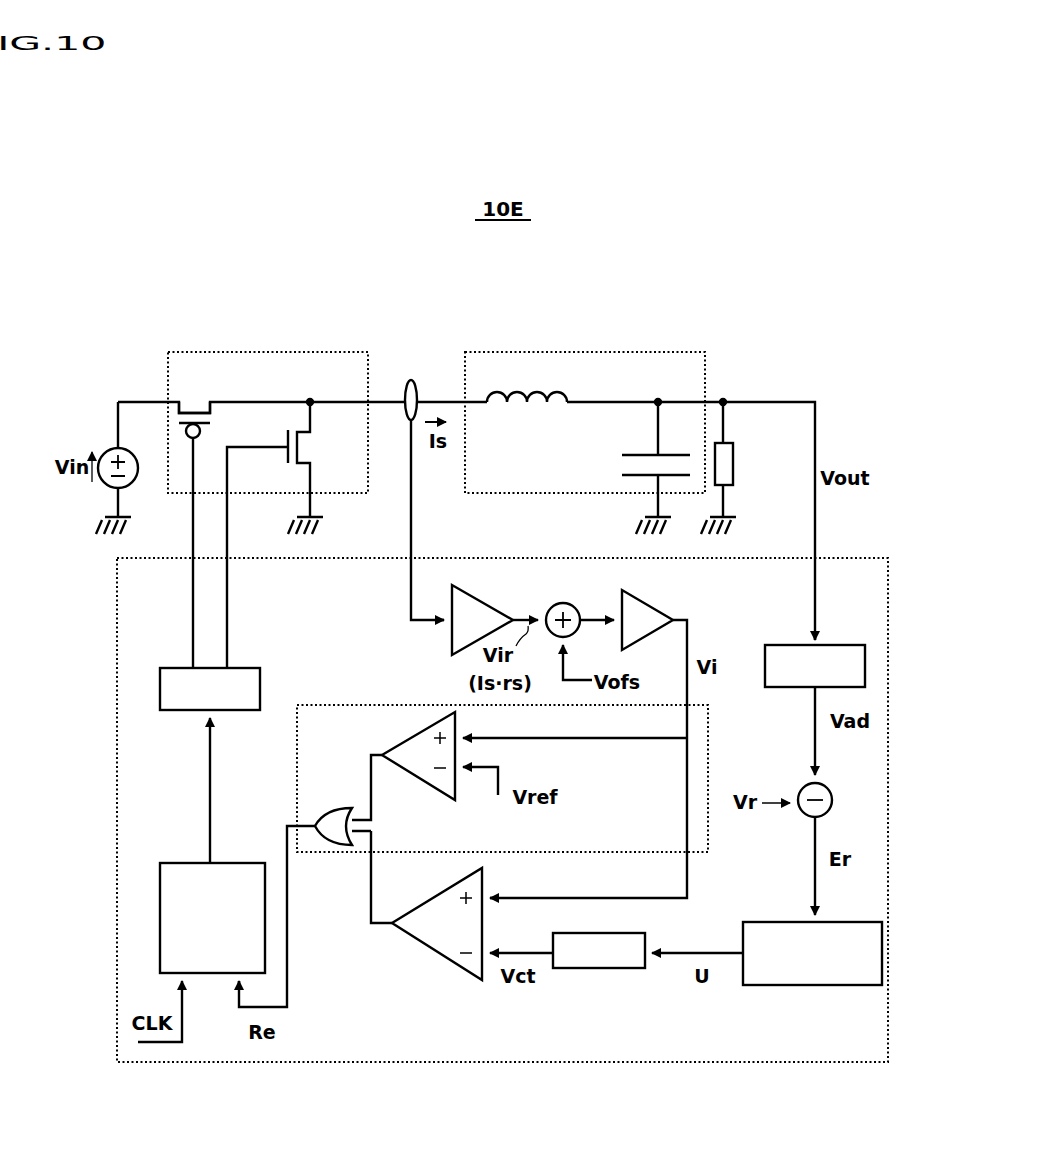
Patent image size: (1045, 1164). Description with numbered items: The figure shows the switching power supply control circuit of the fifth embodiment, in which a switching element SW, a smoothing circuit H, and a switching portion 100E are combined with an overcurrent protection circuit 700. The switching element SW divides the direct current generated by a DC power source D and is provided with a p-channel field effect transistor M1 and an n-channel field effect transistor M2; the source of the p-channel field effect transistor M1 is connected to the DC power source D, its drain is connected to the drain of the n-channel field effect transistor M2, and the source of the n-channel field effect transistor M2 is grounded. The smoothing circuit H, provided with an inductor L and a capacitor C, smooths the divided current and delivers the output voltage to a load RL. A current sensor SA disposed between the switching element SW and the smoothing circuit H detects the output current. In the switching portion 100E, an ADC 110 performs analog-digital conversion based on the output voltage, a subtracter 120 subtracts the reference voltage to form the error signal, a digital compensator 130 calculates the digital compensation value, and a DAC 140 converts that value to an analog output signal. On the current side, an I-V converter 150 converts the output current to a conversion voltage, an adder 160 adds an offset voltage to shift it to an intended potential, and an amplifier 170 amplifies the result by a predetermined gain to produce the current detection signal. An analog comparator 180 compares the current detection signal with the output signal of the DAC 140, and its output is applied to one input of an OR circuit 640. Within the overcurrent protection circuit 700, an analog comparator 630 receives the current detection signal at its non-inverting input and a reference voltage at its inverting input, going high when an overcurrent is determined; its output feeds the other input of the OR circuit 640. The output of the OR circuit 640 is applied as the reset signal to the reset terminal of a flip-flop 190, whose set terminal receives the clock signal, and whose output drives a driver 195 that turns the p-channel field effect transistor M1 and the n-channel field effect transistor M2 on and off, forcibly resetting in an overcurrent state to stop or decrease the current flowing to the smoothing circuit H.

The switching portion 100E is at (853, 555).
The ADC 110 is at (825, 644).
The subtracter 120 is at (797, 790).
The digital compensator 130 is at (800, 985).
The DAC 140 is at (603, 969).
The I-V converter 150 is at (505, 608).
The adder 160 is at (568, 602).
The amplifier 170 is at (645, 598).
The analog comparator 180 is at (435, 957).
The flip-flop 190 is at (228, 860).
The driver 195 is at (250, 712).
The analog comparator 630 is at (418, 726).
The OR circuit 640 is at (325, 809).
The overcurrent protection circuit 700 is at (345, 704).
The switching element SW is at (290, 352).
The p-channel field effect transistor M1 is at (196, 520).
The n-channel field effect transistor M2 is at (288, 535).
The DC power source D is at (127, 468).
The current sensor SA is at (420, 485).
The smoothing circuit H is at (605, 352).
The inductor L is at (527, 383).
The capacitor C is at (643, 468).
The load RL is at (735, 468).